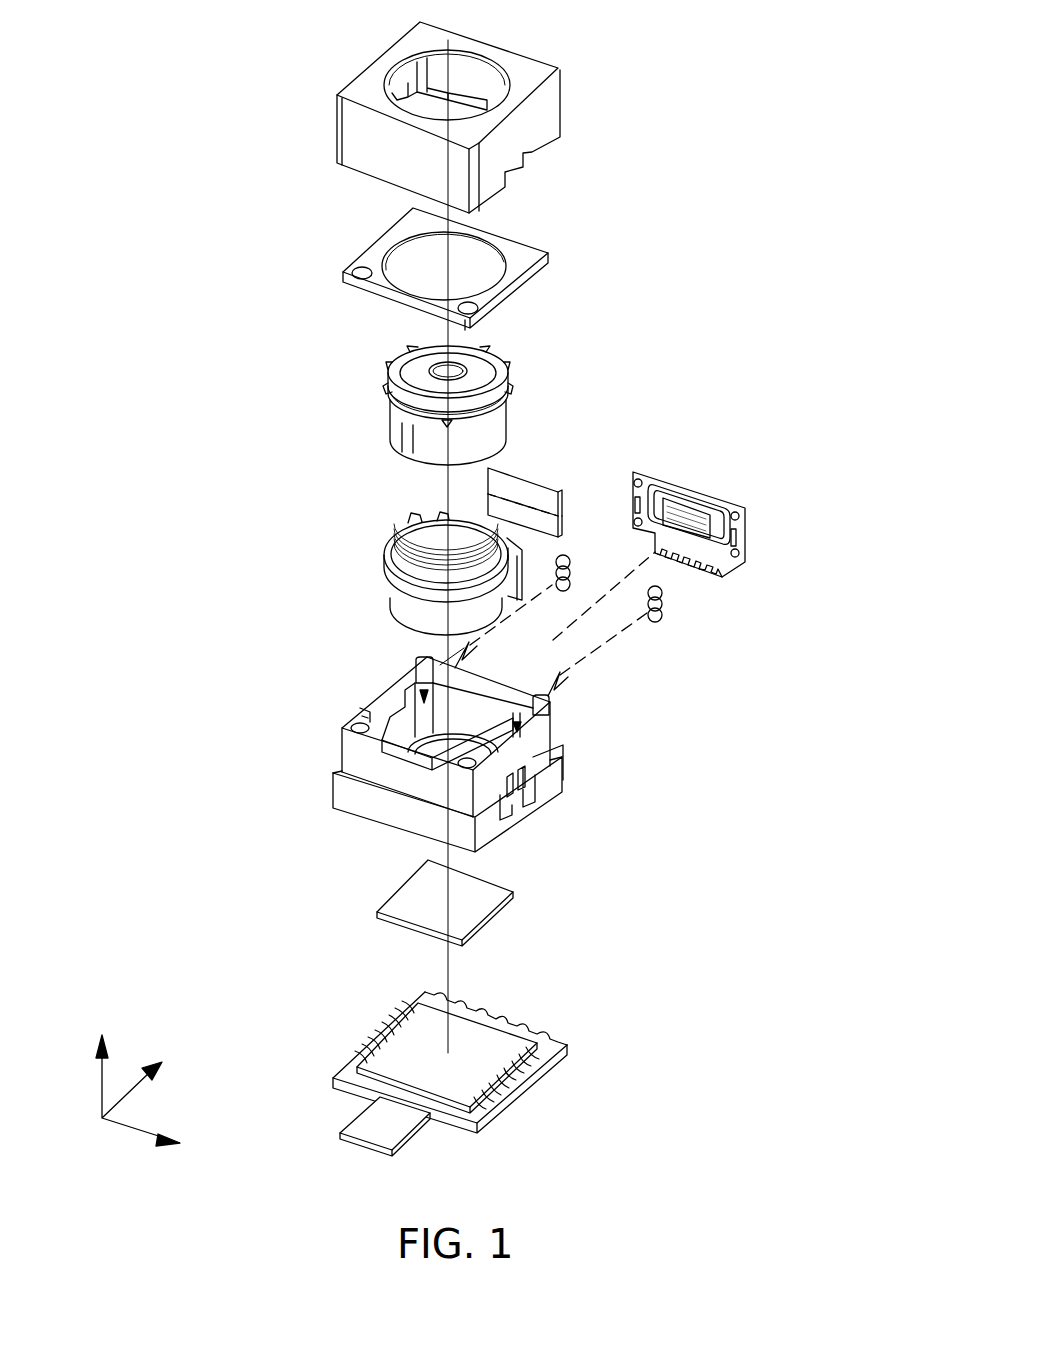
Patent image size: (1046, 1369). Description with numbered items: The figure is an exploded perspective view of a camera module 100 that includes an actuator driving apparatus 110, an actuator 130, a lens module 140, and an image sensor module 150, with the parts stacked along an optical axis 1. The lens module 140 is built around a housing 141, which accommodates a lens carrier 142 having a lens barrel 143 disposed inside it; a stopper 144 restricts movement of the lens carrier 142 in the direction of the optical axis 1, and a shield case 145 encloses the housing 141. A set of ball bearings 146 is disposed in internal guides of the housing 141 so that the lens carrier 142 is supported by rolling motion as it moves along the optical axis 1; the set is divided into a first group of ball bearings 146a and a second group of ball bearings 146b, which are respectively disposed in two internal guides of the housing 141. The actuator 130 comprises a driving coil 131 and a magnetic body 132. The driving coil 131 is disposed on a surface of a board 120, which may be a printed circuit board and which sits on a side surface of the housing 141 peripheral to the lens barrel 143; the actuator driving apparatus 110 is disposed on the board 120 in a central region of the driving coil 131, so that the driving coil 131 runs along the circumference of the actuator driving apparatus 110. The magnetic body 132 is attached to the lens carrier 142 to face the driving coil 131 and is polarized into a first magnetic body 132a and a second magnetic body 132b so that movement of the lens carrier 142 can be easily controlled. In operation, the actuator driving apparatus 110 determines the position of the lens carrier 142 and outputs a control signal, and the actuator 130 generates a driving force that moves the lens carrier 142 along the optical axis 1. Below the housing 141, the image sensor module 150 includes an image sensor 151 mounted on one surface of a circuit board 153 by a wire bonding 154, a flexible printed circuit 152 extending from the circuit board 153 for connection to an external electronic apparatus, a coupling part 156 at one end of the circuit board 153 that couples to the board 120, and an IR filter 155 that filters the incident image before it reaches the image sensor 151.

The camera module 100 is at (708, 46).
The optical axis 1 is at (448, 333).
The lens module 140 is at (250, 156).
The shield case 145 is at (375, 128).
The stopper 144 is at (368, 286).
The lens barrel 143 is at (408, 432).
The lens carrier 142 is at (397, 602).
The housing 141 is at (360, 752).
The actuator 130 is at (738, 349).
The driving coil 131 is at (693, 507).
The magnetic body 132 is at (673, 396).
The first magnetic body 132a is at (515, 490).
The second magnetic body 132b is at (547, 527).
The board 120 is at (712, 562).
The actuator driving apparatus 110 is at (687, 520).
The set of ball bearings 146 is at (717, 727).
The first group of ball bearings 146a is at (561, 591).
The second group of ball bearings 146b is at (653, 622).
The image sensor module 150 is at (250, 818).
The IR filter 155 is at (413, 883).
The coupling part 156 is at (443, 997).
The image sensor 151 is at (430, 1027).
The circuit board 153 is at (397, 1023).
The wire bonding 154 is at (377, 1047).
The flexible printed circuit 152 is at (363, 1130).